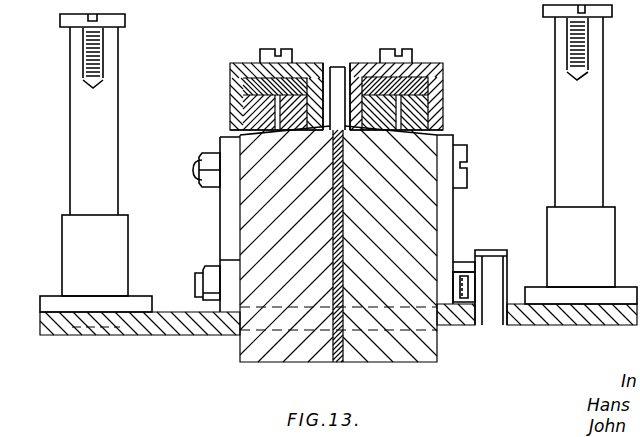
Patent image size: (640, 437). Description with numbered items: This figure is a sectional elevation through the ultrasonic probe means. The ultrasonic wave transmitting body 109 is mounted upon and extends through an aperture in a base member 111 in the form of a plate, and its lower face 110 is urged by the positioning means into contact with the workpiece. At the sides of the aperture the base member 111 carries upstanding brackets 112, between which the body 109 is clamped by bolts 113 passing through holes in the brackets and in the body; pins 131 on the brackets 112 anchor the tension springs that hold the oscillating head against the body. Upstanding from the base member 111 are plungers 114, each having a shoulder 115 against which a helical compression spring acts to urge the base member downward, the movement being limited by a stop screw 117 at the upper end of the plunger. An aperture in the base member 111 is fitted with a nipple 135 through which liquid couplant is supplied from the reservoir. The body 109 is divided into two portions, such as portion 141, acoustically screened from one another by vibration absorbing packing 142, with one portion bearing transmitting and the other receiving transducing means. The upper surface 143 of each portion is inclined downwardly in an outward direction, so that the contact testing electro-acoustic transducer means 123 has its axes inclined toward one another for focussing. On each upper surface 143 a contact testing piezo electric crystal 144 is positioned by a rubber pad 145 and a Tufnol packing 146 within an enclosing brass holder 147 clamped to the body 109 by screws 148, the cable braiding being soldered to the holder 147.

The ultrasonic wave transmitting body 109 is at (440, 237).
The face 110 is at (252, 347).
The base member 111 is at (540, 318).
The upstanding brackets 112 is at (232, 216).
The bolts 113 is at (466, 165).
The plungers 114 is at (107, 112).
The shoulders 115 is at (585, 207).
The stop screws 117 is at (118, 21).
The contact-testing electro-acoustic transducer means 123 is at (352, 62).
The pins 131 is at (195, 287).
The nipple 135 is at (492, 318).
The portion of the body 141 is at (412, 352).
The vibration absorbing packing 142 is at (330, 362).
The upper surface 143 is at (362, 138).
The contact testing piezo electric crystal 144 is at (232, 133).
The rubber pad 145 is at (245, 112).
The Tufnol packing 146 is at (243, 91).
The brass holder 147 is at (240, 72).
The screws 148 is at (268, 50).